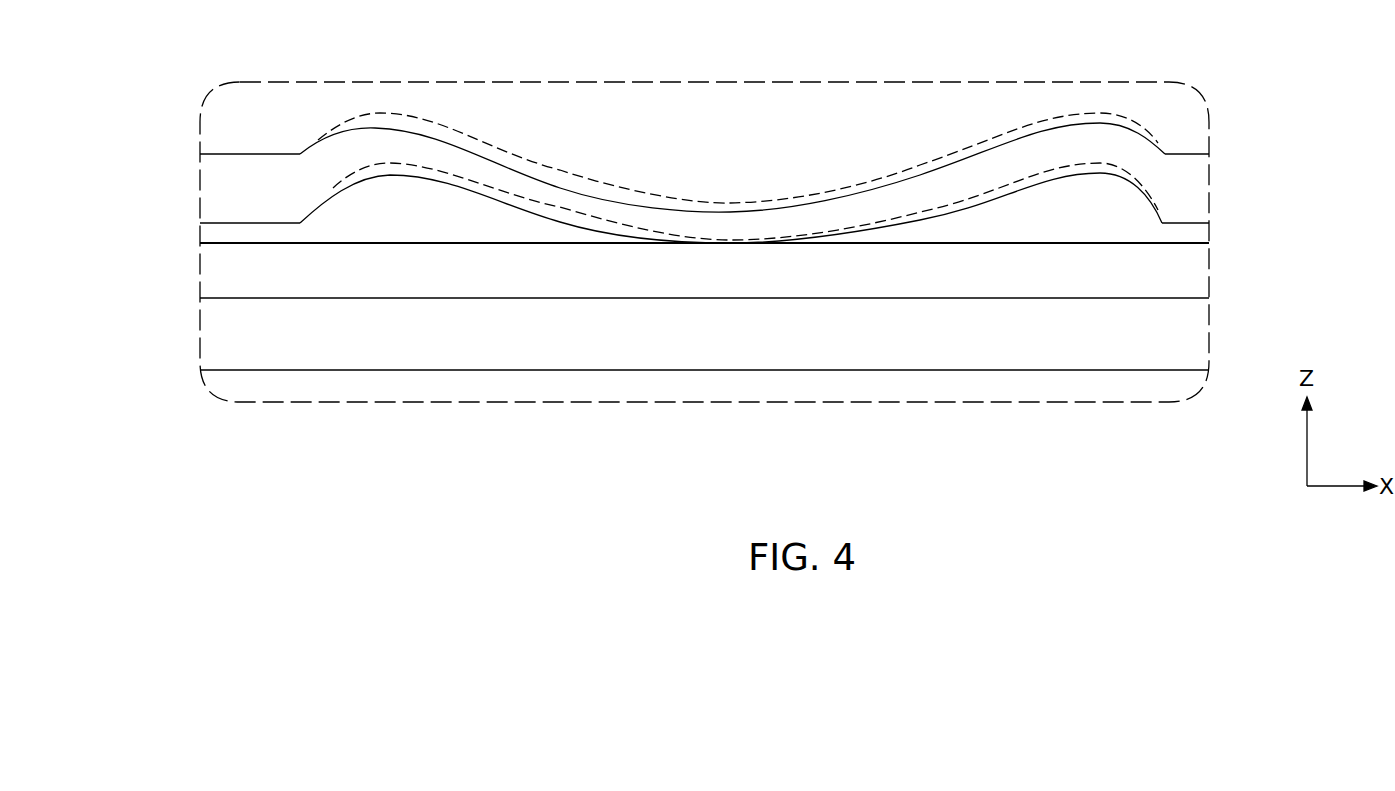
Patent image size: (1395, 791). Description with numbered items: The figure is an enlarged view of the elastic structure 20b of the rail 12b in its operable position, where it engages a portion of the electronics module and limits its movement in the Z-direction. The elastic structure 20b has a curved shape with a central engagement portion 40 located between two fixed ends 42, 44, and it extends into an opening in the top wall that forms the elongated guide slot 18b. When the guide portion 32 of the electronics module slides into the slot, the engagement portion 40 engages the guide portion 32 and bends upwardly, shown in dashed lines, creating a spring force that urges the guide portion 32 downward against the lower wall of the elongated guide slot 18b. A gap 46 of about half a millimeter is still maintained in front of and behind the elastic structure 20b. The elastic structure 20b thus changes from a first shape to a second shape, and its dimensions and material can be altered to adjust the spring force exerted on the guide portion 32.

The rail 12b is at (191, 340).
The elongated guide slot 18b is at (191, 265).
The elastic structure 20b is at (512, 114).
The guide portion 32 is at (1193, 268).
The engagement portion 40 is at (707, 223).
The fixed end 42 is at (1193, 181).
The fixed end 44 is at (283, 167).
The gap 46 is at (1196, 233).